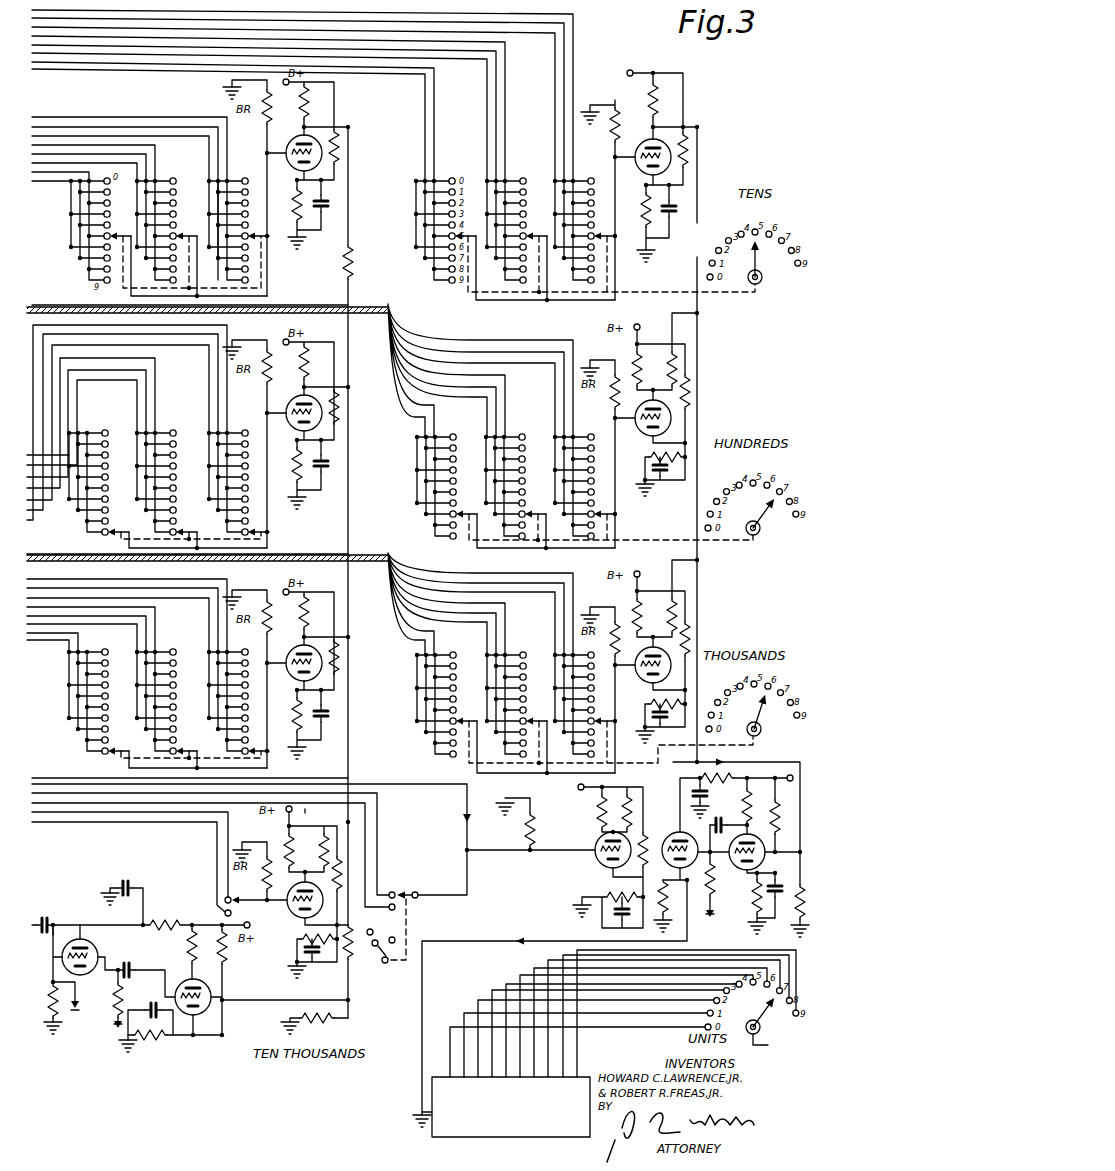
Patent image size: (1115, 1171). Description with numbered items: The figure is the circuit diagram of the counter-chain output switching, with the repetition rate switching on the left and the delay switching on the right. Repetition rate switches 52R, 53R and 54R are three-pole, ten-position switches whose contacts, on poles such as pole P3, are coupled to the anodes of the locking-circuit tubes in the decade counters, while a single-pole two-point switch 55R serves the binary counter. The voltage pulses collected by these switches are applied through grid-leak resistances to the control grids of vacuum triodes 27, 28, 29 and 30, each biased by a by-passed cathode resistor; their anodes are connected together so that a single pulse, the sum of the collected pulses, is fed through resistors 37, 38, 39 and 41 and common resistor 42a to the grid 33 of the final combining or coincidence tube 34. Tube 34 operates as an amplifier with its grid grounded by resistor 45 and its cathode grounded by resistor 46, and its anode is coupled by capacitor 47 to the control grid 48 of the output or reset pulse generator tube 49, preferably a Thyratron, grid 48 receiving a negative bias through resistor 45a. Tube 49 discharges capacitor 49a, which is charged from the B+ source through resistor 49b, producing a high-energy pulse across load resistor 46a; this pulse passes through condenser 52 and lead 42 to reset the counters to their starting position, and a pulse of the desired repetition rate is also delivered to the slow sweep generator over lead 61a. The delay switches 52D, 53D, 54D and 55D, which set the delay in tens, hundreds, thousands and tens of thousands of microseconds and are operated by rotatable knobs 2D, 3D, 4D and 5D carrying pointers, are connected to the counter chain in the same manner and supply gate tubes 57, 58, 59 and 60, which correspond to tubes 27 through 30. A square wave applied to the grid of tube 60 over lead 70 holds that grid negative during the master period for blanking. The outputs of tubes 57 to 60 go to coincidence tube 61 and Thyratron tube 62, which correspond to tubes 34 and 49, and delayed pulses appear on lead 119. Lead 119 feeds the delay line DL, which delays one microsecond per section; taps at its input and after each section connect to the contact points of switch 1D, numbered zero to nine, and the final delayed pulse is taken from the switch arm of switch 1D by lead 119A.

The vacuum triode 27 is at (304, 136).
The vacuum triode 28 is at (286, 414).
The vacuum triode 29 is at (286, 660).
The vacuum triode 30 is at (287, 912).
The grid 33 is at (176, 994).
The coincidence tube 34 is at (200, 1022).
The resistor 37 is at (352, 272).
The resistor 38 is at (322, 392).
The resistor 39 is at (322, 642).
The resistor 41 is at (320, 832).
The lead 42 is at (40, 914).
The common resistor 42a is at (346, 975).
The resistor 45 is at (300, 1022).
The resistor 45a is at (116, 1038).
The cathode resistor 46 is at (162, 1042).
The load resistor 46a is at (50, 1032).
The capacitor 47 is at (160, 946).
The control grid 48 is at (124, 956).
The reset pulse generator tube 49 is at (85, 965).
The capacitor 49a is at (133, 864).
The resistor 49b is at (183, 912).
The condenser 52 is at (50, 922).
The vacuum tube 57 is at (645, 142).
The vacuum tube 58 is at (635, 427).
The vacuum tube 59 is at (635, 672).
The gate tube 60 is at (595, 850).
The coincidence tube 61 is at (736, 862).
The lead 61a is at (76, 1014).
The Thyratron tube 62 is at (672, 835).
The lead 70 is at (76, 778).
The lead 119 is at (687, 943).
The lead 119A is at (778, 1043).
The time delay switch 1D is at (755, 1002).
The rotatable knob 2D is at (760, 288).
The rotatable knob 3D is at (764, 538).
The rotatable knob 4D is at (766, 738).
The rotatable knob 5D is at (372, 1012).
The repetition rate switch 52R is at (190, 161).
The delay switch 52D is at (540, 157).
The repetition rate switch 53R is at (195, 386).
The delay switch 53D is at (545, 413).
The repetition rate switch 54R is at (195, 630).
The delay switch 54D is at (543, 631).
The repetition rate switch 55R is at (222, 890).
The delay switch 55D is at (428, 867).
The pole P3 is at (262, 158).
The delay line DL is at (510, 1138).